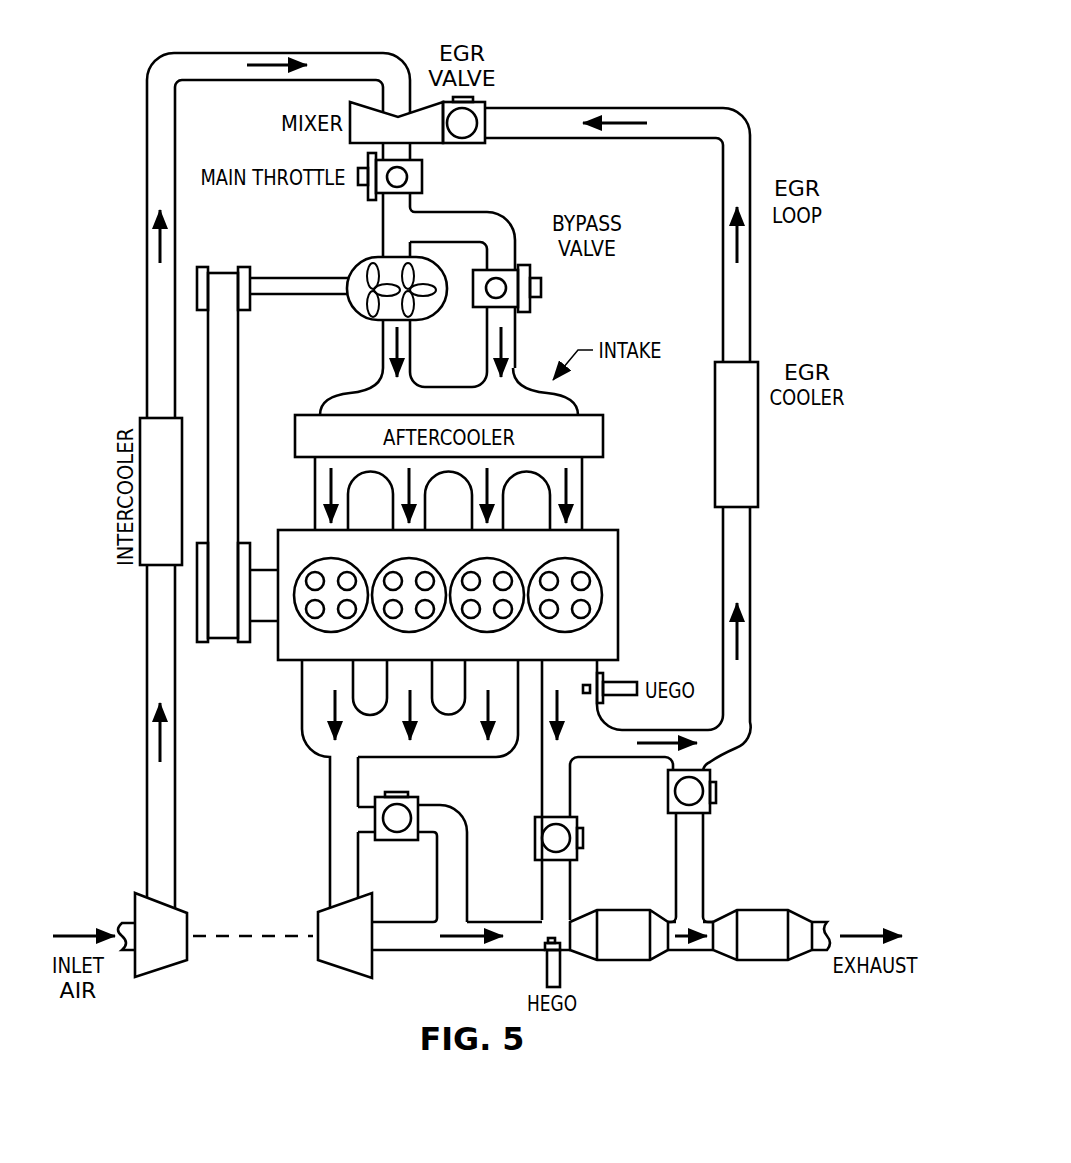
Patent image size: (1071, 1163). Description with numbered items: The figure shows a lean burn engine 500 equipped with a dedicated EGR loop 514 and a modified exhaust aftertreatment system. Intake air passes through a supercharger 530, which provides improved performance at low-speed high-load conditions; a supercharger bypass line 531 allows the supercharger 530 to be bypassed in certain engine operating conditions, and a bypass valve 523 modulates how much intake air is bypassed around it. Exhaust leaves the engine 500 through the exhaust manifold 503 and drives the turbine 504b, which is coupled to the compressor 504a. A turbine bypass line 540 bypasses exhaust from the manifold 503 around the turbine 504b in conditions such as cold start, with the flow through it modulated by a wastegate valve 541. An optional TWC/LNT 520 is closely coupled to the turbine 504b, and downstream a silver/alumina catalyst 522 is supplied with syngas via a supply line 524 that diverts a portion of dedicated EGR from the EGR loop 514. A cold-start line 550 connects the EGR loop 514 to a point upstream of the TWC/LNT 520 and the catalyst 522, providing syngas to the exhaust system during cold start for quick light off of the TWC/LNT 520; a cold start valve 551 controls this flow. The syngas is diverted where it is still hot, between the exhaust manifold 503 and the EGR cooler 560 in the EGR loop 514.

The engine 500 is at (270, 648).
The exhaust manifold 503 is at (302, 723).
The compressor 504a is at (160, 970).
The turbine 504b is at (340, 968).
The EGR loop 514 is at (752, 252).
The TWC/LNT 520 is at (620, 960).
The silver/alumina catalyst 522 is at (762, 960).
The bypass valve 523 is at (541, 288).
The supply line 524 is at (703, 868).
The supercharger 530 is at (349, 270).
The supercharger bypass line 531 is at (448, 212).
The turbine bypass line 540 is at (467, 878).
The wastegate valve 541 is at (397, 840).
The cold-start line 550 is at (570, 788).
The cold start valve 551 is at (585, 843).
The EGR cooler 560 is at (758, 432).